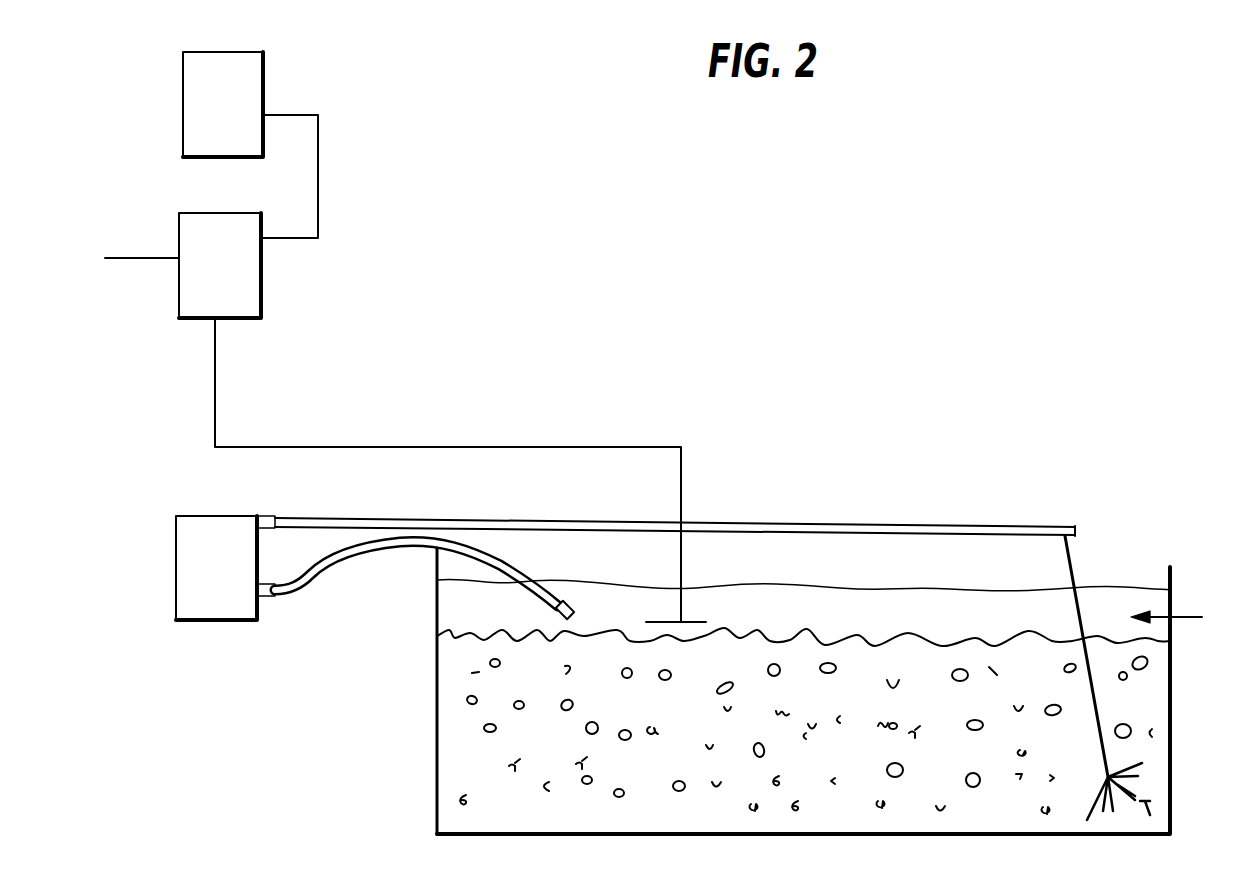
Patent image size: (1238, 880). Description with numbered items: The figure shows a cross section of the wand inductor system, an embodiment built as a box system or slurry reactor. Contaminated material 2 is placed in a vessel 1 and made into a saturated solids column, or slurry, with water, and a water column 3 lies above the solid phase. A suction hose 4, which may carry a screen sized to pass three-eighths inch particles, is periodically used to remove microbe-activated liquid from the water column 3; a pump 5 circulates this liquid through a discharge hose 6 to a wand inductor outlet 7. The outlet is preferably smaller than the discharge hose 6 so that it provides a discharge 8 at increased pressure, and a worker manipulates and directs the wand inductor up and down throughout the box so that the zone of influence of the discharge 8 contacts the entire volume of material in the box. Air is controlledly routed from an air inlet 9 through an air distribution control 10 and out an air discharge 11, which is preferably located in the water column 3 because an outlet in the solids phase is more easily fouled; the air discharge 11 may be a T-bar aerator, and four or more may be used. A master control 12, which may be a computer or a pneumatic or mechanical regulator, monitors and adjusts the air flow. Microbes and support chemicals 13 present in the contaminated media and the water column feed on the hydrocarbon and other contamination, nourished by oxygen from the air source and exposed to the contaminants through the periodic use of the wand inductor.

The vessel 1 is at (435, 788).
The contaminated material 2 is at (460, 723).
The water column 3 is at (452, 613).
The suction hose 4 is at (530, 578).
The pump 5 is at (188, 517).
The discharge hose 6 is at (540, 519).
The wand inductor outlet 7 is at (1107, 760).
The discharge 8 is at (1125, 786).
The air inlet 9 is at (145, 258).
The air distribution control 10 is at (228, 213).
The air discharge 11 is at (690, 621).
The master control 12 is at (228, 51).
The microbes and support chemicals 13 is at (452, 680).